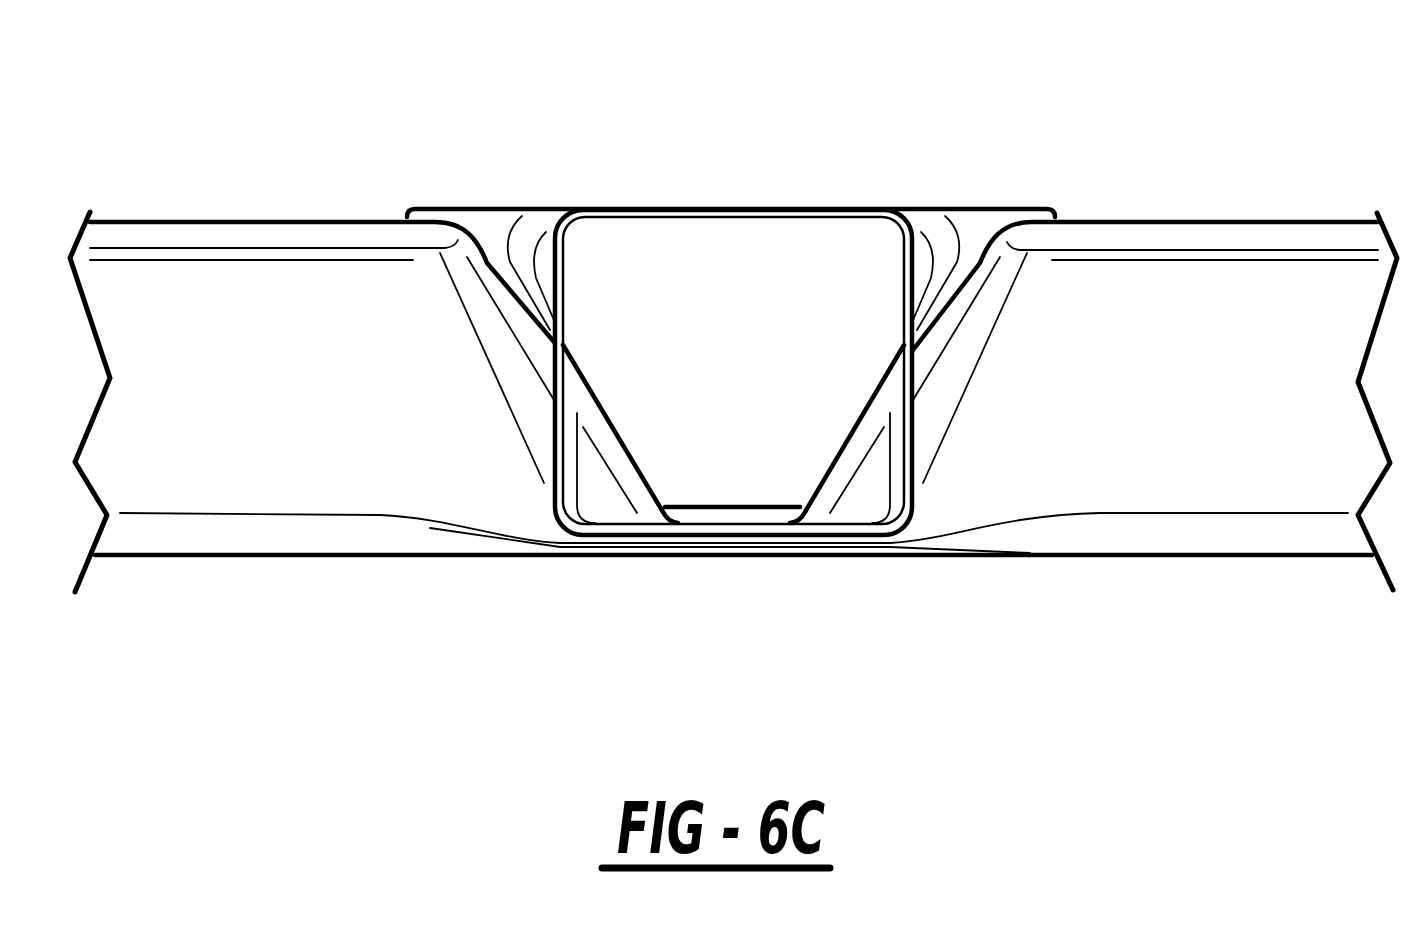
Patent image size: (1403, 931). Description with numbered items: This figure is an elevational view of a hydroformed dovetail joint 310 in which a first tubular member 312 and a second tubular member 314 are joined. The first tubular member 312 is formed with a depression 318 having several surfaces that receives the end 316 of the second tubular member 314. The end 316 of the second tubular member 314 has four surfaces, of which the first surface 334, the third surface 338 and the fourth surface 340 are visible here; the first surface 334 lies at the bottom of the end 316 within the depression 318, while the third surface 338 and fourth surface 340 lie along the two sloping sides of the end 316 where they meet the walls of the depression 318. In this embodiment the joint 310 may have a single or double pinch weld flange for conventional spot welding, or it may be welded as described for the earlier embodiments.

The joint 310 is at (1053, 148).
The first tubular member 312 is at (194, 238).
The second tubular member 314 is at (907, 420).
The end 316 is at (928, 212).
The depression 318 is at (517, 364).
The first surface 334 is at (729, 507).
The third surface 338 is at (947, 308).
The fourth surface 340 is at (500, 272).